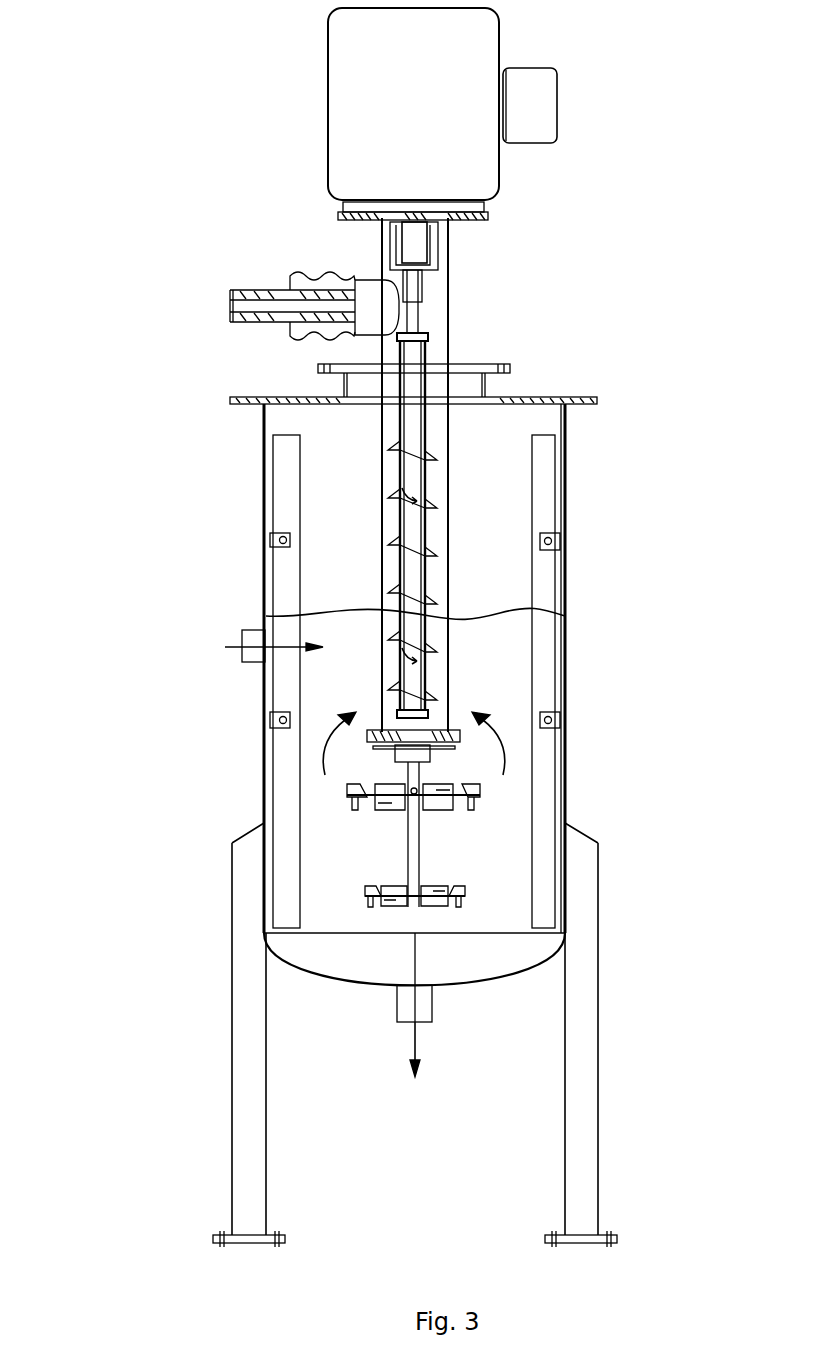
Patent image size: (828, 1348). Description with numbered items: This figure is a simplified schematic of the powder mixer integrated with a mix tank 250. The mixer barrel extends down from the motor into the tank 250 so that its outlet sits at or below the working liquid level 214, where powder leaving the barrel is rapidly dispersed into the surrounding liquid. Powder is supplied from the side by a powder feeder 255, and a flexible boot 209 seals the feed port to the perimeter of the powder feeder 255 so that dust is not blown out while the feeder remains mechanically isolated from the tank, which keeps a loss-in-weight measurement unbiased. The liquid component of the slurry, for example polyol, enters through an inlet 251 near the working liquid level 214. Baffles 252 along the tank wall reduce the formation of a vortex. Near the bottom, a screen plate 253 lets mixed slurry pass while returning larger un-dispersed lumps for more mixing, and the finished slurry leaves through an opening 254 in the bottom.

The flexible boot 209 is at (288, 325).
The working liquid level 214 is at (337, 610).
The tank 250 is at (563, 513).
The inlet 251 is at (242, 665).
The baffles 252 is at (547, 623).
The screen plate 253 is at (415, 935).
The opening 254 is at (410, 1020).
The powder feeder 255 is at (230, 322).